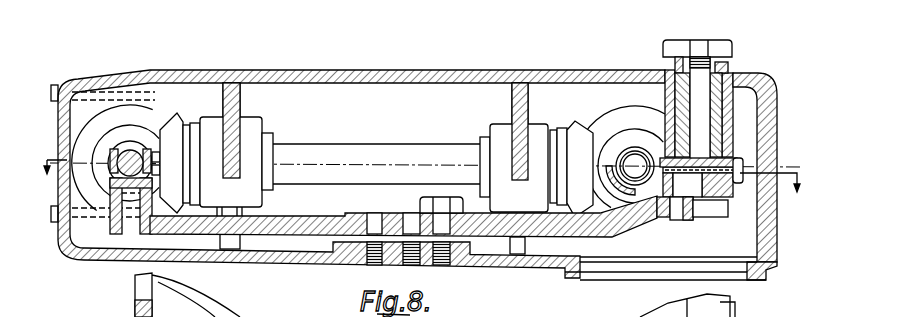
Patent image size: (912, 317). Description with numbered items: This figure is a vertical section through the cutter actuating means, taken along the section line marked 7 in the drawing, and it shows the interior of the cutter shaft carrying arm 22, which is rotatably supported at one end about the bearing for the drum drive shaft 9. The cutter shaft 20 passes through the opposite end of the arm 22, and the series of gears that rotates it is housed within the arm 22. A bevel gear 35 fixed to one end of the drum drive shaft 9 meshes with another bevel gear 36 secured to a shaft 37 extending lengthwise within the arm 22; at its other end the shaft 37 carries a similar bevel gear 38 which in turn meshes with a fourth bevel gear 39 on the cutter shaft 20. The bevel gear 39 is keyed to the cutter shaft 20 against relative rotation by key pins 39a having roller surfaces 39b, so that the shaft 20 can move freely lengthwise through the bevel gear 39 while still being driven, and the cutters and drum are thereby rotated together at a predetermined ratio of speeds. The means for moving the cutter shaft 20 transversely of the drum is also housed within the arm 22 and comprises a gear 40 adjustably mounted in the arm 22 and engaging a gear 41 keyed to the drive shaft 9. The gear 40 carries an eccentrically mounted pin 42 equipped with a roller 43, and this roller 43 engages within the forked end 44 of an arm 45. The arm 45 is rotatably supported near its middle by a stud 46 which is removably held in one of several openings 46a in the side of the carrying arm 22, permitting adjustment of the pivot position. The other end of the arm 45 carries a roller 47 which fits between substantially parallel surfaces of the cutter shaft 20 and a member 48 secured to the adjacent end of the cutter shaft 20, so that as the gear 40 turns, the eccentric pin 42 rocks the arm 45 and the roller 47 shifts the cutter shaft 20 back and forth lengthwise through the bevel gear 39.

The section line 7- 7 is at (421, 188).
The drum drive shaft 9 is at (634, 162).
The cutter shaft 20 is at (133, 153).
The arm 22 is at (307, 74).
The bevel gear 35 is at (618, 118).
The bevel gear 36 is at (567, 128).
The shaft 37 is at (418, 153).
The bevel gear 38 is at (173, 130).
The bevel gear 39 is at (93, 125).
The key pins 39a is at (156, 160).
The roller surfaces 39b is at (156, 172).
The gear 40 is at (740, 166).
The gear 41 is at (643, 142).
The pin 42 is at (678, 220).
The roller 43 is at (666, 217).
The forked end 44 is at (713, 216).
The arm 45 is at (590, 233).
The stud 46 is at (422, 202).
The openings 46a is at (447, 232).
The roller 47 is at (108, 202).
The member 48 is at (116, 140).